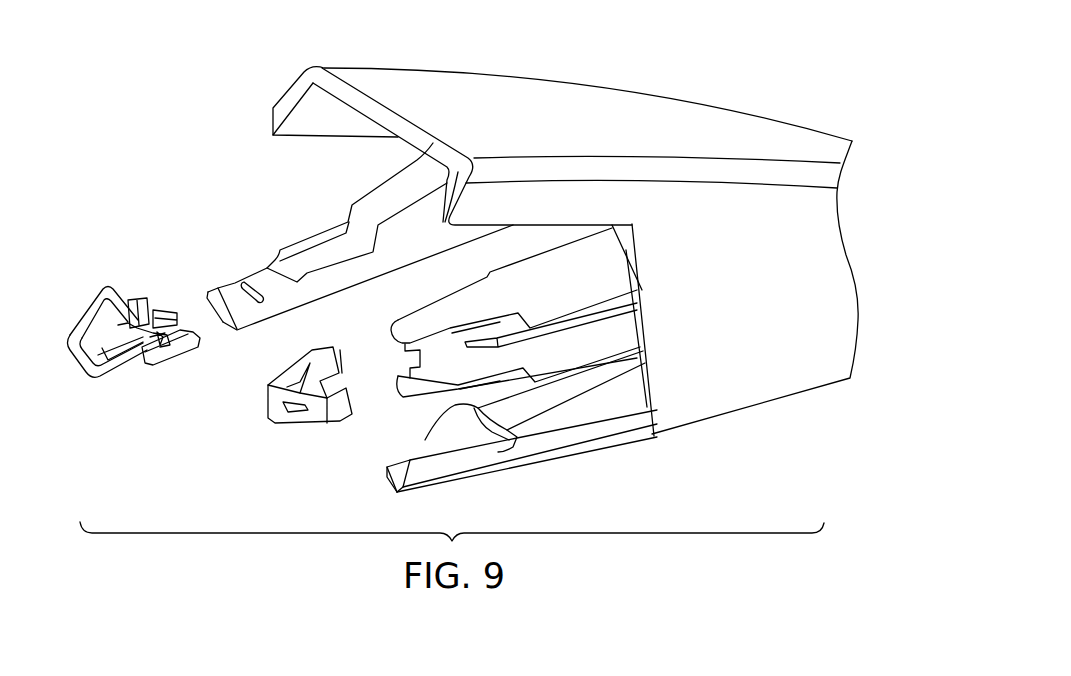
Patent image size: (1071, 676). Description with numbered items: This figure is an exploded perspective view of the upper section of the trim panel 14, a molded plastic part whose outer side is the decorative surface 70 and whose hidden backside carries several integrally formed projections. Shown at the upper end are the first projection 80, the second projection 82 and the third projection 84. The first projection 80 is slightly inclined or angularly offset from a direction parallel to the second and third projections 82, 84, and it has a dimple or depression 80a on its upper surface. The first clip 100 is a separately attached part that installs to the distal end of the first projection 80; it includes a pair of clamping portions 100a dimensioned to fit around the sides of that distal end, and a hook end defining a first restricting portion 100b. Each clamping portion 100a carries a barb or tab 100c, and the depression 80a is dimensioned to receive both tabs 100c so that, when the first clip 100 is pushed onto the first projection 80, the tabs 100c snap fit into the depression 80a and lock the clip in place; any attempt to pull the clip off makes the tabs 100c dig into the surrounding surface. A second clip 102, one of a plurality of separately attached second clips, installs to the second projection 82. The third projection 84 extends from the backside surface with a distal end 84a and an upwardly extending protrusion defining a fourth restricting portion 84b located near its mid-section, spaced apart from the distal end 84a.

The trim panel 14 is at (561, 103).
The decorative surface 70 is at (680, 120).
The first projection 80 is at (360, 236).
The dimple or depression 80a is at (247, 280).
The second projection 82 is at (463, 310).
The third projection 84 is at (491, 429).
The distal end 84a is at (398, 478).
The fourth restricting portion 84b is at (452, 406).
The first clip 100 is at (161, 319).
The clamping portions 100a is at (163, 312).
The first restricting portion 100b is at (127, 303).
The tab 100c is at (153, 332).
The second clip 102 is at (270, 403).